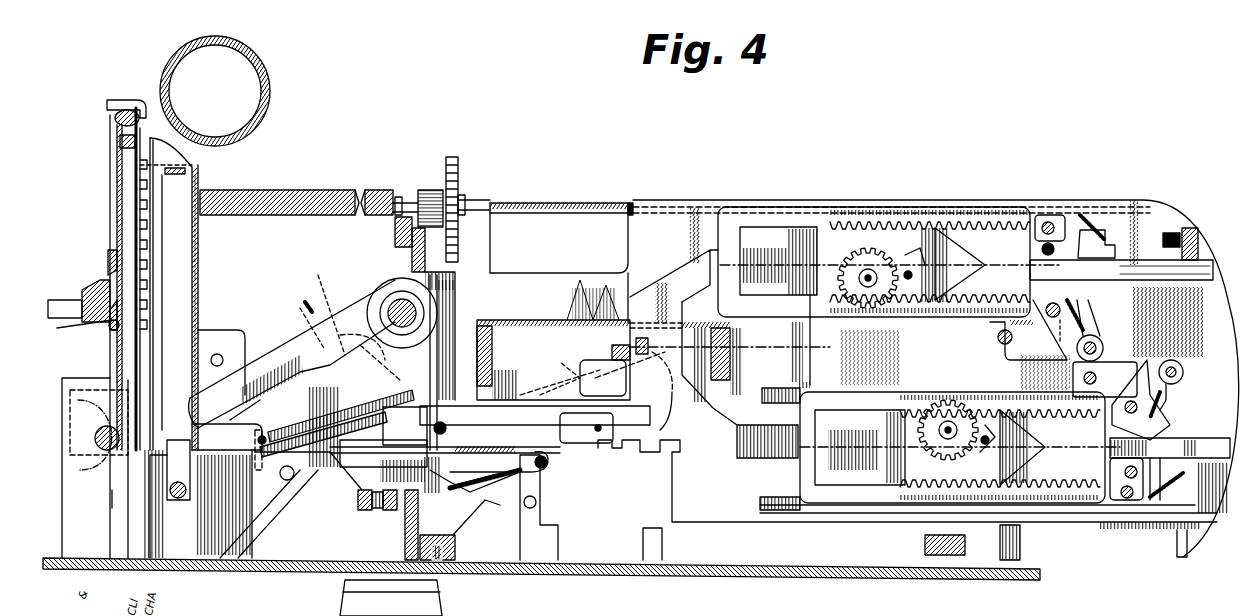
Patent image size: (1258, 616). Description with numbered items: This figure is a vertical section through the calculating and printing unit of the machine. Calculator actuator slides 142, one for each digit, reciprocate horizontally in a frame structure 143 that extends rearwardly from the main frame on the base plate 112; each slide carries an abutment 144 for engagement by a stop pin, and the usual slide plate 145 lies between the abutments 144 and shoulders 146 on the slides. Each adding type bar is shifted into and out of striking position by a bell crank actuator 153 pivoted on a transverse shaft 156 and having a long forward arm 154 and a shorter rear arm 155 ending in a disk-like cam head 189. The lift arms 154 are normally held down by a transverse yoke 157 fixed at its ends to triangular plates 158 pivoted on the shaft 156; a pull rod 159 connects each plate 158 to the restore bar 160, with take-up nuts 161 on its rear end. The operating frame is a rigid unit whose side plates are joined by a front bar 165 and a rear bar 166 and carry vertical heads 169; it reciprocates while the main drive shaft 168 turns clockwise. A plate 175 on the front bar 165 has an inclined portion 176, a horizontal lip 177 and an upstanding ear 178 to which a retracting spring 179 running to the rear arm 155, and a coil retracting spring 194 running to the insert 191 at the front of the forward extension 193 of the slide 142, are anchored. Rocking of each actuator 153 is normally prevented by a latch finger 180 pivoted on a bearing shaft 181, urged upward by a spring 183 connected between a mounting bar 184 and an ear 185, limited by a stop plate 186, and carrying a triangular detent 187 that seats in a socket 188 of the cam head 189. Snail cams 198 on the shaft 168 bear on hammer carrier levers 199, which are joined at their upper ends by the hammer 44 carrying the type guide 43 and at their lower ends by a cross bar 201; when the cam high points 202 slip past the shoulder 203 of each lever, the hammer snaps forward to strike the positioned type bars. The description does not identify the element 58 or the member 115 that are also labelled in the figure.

The type guide 43 is at (128, 99).
The hammer member 44 is at (115, 118).
The ring 58 is at (268, 83).
The base plate 112 is at (590, 580).
The pin 115 is at (390, 450).
The calculator actuator slide 142 is at (650, 292).
The frame structure 143 is at (650, 215).
The abutment 144 is at (625, 470).
The slide plate 145 is at (660, 470).
The shoulders 146 is at (740, 389).
The bell crank actuator 153 is at (352, 278).
The forward arm 154 is at (255, 340).
The rear arm 155 is at (440, 345).
The shaft 156 is at (420, 300).
The transverse yoke 157 is at (300, 300).
The triangular plate 158 is at (324, 302).
The pull rod 159 is at (540, 375).
The restore bar 160 is at (612, 342).
The nuts 161 is at (669, 373).
The front bar 165 is at (400, 500).
The rear bar 166 is at (925, 545).
The main drive shaft 168 is at (112, 460).
The heads 169 is at (228, 312).
The plate 175 is at (380, 512).
The inclined portion 176 is at (350, 500).
The lip 177 is at (300, 480).
The ear 178 is at (299, 460).
The retracting spring 179 is at (341, 413).
The latch finger 180 is at (458, 428).
The bearing shaft 181 is at (560, 462).
The spring 183 is at (510, 505).
The mounting bar 184 is at (475, 536).
The ear 185 is at (540, 490).
The plate 186 is at (490, 450).
The detent 187 is at (437, 536).
The socket 188 is at (475, 479).
The cam head 189 is at (492, 370).
The insert 191 is at (370, 355).
The forward extension 193 is at (580, 375).
The coil retracting spring 194 is at (380, 402).
The snail cams 198 is at (109, 511).
The hammer carrier levers 199 is at (215, 435).
The cross bar 201 is at (190, 493).
The high points 202 is at (52, 420).
The shoulder 203 is at (159, 504).